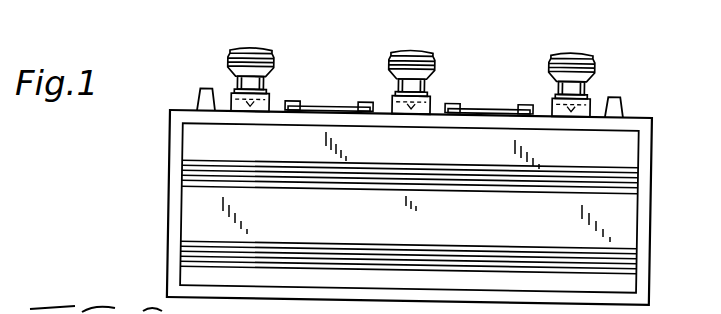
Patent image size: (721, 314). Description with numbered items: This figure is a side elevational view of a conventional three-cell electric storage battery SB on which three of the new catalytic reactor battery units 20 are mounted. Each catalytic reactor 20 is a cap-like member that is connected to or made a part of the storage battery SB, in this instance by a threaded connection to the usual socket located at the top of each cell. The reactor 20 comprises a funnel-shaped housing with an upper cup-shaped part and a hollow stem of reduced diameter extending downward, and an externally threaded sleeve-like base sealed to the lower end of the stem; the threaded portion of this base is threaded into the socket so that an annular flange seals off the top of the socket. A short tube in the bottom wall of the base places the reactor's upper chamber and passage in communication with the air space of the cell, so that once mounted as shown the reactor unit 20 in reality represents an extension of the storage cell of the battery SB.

The storage battery SB is at (207, 209).
The catalytic reactor battery unit 20 is at (411, 71).